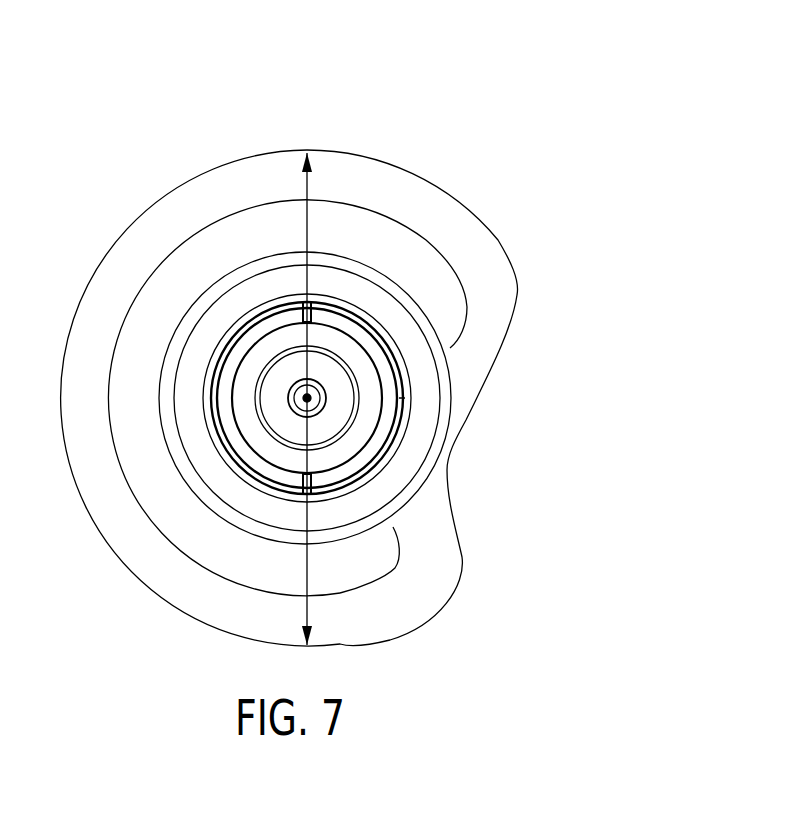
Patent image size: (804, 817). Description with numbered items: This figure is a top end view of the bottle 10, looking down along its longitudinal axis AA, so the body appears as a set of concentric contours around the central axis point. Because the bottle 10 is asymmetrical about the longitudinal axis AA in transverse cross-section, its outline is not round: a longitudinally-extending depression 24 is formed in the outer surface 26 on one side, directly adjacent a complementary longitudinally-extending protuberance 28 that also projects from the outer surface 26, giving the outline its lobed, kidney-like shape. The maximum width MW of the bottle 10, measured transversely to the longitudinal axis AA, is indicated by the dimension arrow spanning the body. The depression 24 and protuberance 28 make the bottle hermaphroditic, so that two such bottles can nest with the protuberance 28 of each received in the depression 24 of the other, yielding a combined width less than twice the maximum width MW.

The package/bottle 10 is at (306, 333).
The longitudinally-extending depression 24 is at (511, 451).
The outer surface 26 is at (528, 291).
The longitudinally-extending protuberance 28 is at (489, 337).
The maximum width MW is at (303, 192).
The longitudinal axis AA is at (307, 398).